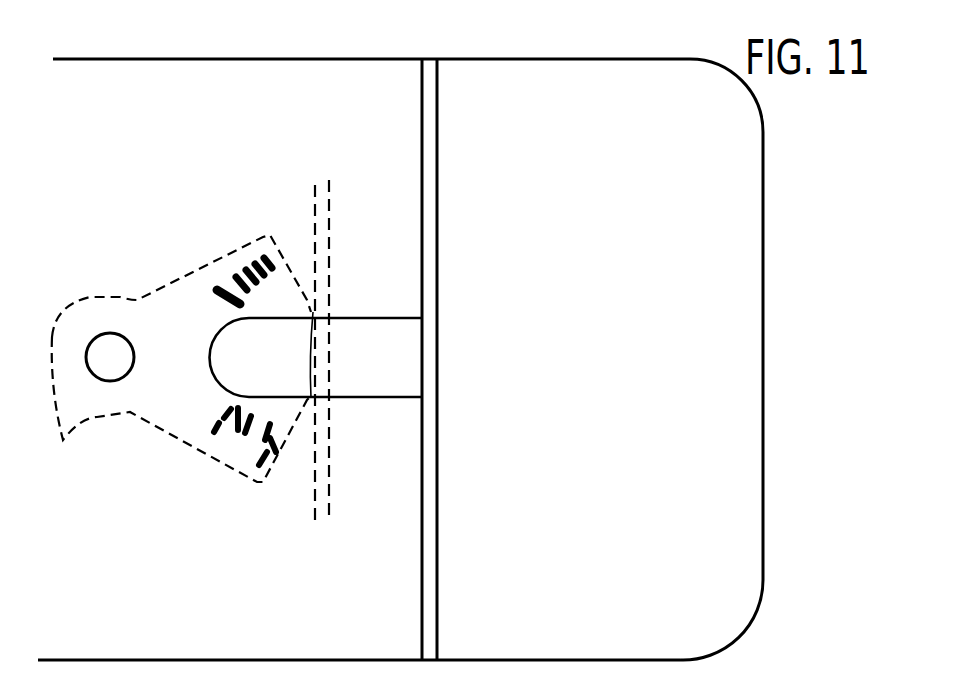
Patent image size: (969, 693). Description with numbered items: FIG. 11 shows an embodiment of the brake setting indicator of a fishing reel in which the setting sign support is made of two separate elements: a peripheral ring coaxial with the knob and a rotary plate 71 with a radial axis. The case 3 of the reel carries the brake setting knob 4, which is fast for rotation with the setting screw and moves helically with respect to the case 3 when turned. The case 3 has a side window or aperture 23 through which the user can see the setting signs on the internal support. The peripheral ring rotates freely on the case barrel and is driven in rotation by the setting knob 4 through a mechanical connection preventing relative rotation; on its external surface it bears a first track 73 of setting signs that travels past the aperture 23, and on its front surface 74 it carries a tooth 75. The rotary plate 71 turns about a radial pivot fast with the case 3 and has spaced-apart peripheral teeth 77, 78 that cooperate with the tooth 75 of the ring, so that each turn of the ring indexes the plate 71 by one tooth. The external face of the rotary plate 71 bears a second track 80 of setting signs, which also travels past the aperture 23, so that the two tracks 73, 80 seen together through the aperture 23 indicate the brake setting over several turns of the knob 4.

The case 3 is at (90, 76).
The brake setting knob 4 is at (688, 74).
The side window or aperture 23 is at (345, 387).
The rotary plate 71 is at (150, 405).
The first track of setting signs 73 is at (383, 367).
The front surface 74 is at (334, 176).
The tooth 75 is at (328, 263).
The peripheral tooth 77 is at (318, 412).
The peripheral tooth 78 is at (306, 302).
The second track of setting signs 80 is at (243, 375).